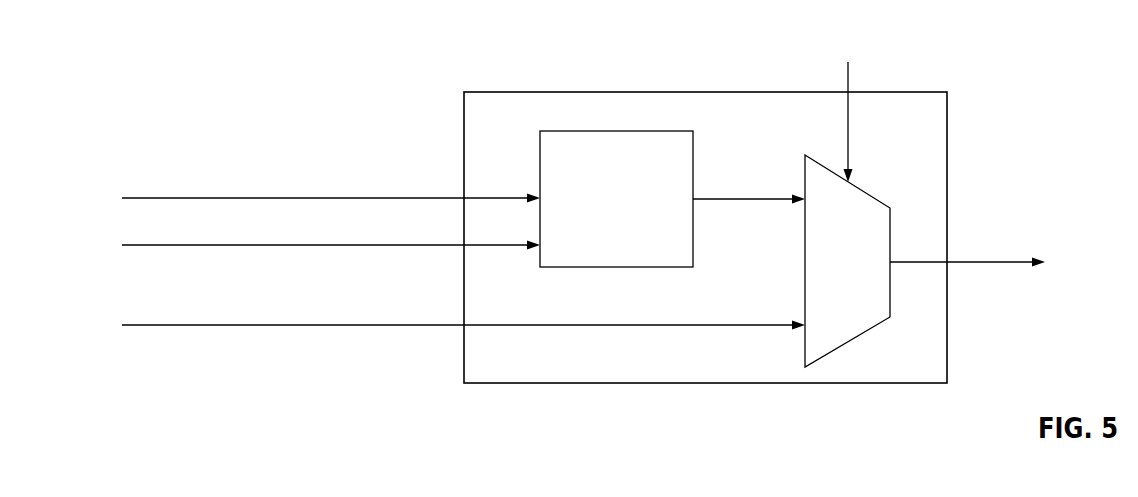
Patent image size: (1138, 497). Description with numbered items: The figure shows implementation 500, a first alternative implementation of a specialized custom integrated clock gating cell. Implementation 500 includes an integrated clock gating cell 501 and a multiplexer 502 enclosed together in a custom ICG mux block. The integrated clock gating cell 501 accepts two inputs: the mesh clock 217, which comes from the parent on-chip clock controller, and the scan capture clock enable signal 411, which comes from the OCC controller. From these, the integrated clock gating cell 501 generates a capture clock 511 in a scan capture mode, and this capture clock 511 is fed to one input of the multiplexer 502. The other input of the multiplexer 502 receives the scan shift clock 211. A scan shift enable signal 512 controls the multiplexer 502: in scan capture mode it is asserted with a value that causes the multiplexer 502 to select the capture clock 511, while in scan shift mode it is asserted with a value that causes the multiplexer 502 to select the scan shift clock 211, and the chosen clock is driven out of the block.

The implementation 500 is at (170, 46).
The mesh clock 217 is at (318, 198).
The scan capture clock enable signal 411 is at (185, 247).
The scan shift clock 211 is at (253, 327).
The integrated clock gating cell 501 is at (608, 131).
The capture clock 511 is at (755, 197).
The scan shift enable signal 512 is at (848, 120).
The multiplexer 502 is at (848, 343).